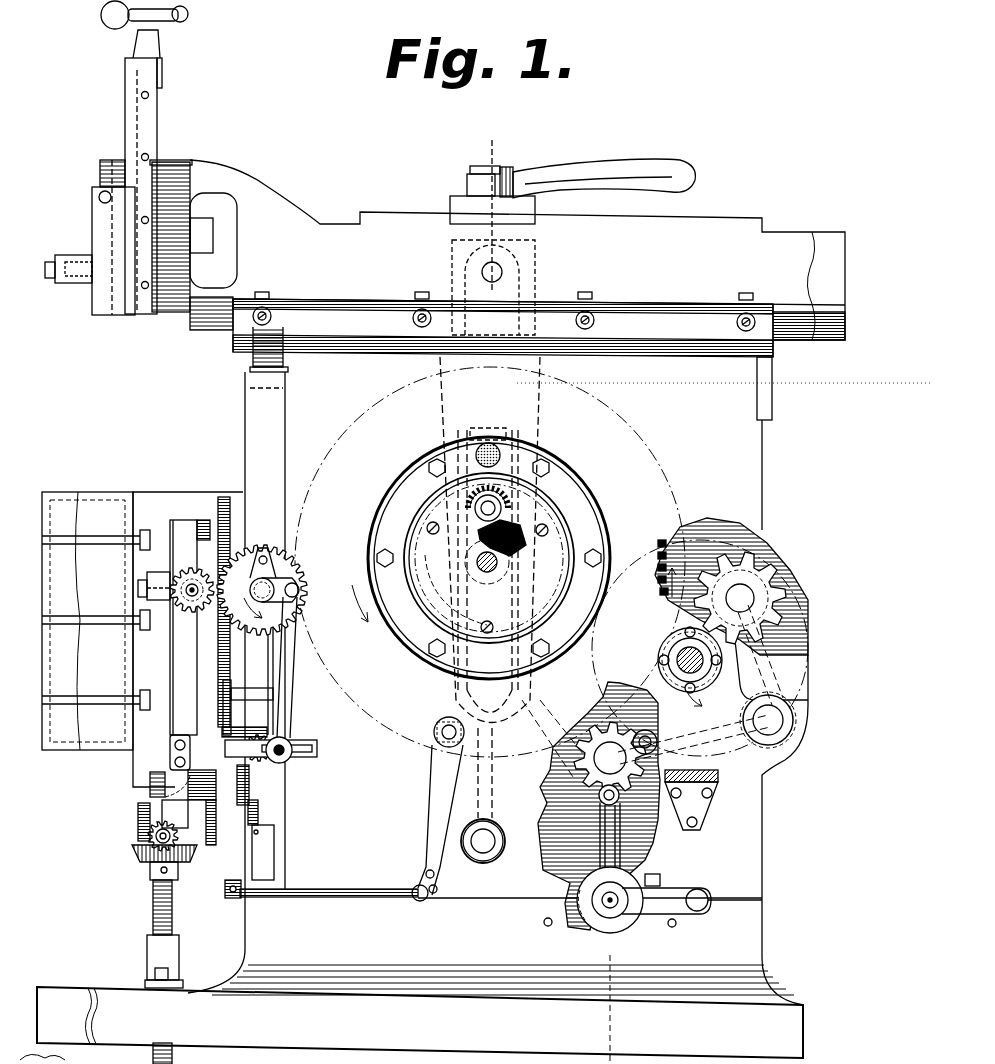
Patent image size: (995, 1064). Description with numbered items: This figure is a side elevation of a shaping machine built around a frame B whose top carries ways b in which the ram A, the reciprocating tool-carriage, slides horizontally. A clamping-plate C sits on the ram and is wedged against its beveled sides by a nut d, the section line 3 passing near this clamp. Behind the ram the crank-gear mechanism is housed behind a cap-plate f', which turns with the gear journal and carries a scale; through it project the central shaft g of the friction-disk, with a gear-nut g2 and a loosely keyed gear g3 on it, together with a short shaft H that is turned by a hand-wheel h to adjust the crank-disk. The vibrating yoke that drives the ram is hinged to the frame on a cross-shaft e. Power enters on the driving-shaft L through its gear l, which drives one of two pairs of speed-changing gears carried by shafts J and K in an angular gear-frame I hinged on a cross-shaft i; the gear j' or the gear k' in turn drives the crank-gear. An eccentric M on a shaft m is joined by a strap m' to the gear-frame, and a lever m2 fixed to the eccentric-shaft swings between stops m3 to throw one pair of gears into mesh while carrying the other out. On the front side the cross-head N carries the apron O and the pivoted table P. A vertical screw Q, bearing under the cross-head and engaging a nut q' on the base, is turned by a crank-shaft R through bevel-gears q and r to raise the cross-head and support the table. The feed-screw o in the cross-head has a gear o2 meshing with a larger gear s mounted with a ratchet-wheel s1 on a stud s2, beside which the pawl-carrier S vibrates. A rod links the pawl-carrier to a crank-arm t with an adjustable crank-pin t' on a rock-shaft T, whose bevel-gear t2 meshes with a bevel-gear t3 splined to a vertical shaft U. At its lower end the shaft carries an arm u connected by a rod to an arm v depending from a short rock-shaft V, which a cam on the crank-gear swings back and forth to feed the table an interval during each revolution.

The ram A is at (517, 250).
The frame B is at (485, 695).
The clamping-plate C is at (456, 196).
The nut d is at (478, 174).
The section line 3 is at (490, 148).
The ways b is at (539, 324).
The short shaft H is at (478, 568).
The hand-wheel h is at (490, 573).
The central shaft g is at (495, 495).
The gear-nut g2 is at (478, 532).
The gear g3 is at (503, 512).
The cap-plate f' is at (520, 587).
The rock-shaft V is at (434, 722).
The arm v is at (430, 835).
The cross-shaft e is at (483, 841).
The shaft J is at (592, 750).
The gear j' is at (594, 773).
The eccentric M is at (610, 900).
The eccentric-shaft m is at (605, 923).
The strap m' is at (688, 812).
The lever m2 is at (692, 894).
The stops m3 is at (670, 927).
The shaft K is at (790, 560).
The gear k' is at (744, 573).
The driving-shaft L is at (672, 650).
The gear l is at (705, 660).
The gear-frame I is at (650, 738).
The cross-shaft i is at (752, 720).
The table P is at (96, 621).
The apron O is at (154, 623).
The feed-screw o is at (190, 600).
The gear o2 is at (188, 570).
The cross-head N is at (188, 639).
The pawl-carrier S is at (256, 572).
The gear s is at (300, 580).
The ratchet-wheel s1 is at (250, 592).
The stud s2 is at (280, 609).
The vertical shaft U is at (285, 663).
The rock-shaft T is at (228, 748).
The crank-arm t is at (275, 735).
The crank-pin t' is at (298, 763).
The bevel-gear t2 is at (193, 787).
The bevel-gear t3 is at (268, 730).
The bevel-gear r is at (140, 822).
The crank-shaft R is at (132, 850).
The bevel-gear q is at (144, 869).
The vertical screw Q is at (153, 908).
The nut q' is at (146, 961).
The arm u is at (232, 878).